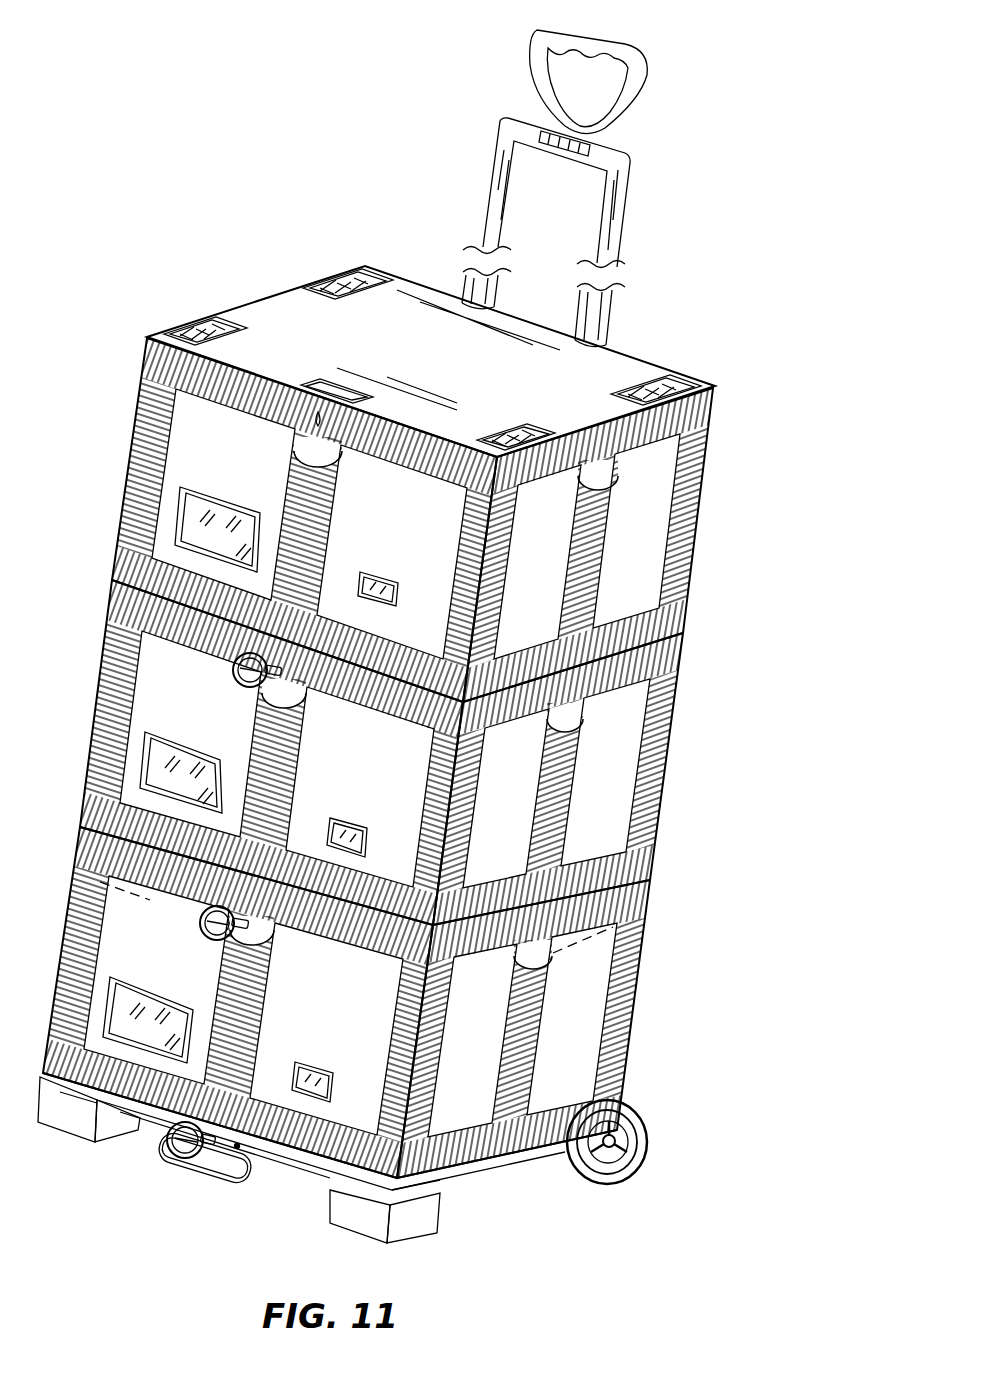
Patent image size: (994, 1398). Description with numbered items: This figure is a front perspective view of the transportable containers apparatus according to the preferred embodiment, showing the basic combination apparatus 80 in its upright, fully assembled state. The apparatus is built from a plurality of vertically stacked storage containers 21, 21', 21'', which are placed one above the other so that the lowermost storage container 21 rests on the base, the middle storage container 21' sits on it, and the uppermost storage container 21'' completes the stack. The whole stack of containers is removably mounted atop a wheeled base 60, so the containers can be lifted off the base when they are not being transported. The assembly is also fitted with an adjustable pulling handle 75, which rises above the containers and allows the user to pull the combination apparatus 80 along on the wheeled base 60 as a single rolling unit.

The adjustable pulling handle 75 is at (647, 46).
The combination apparatus 80 is at (682, 316).
The storage container 21'' is at (471, 484).
The storage container 21' is at (438, 752).
The storage container 21 is at (397, 1002).
The wheeled base 60 is at (510, 1182).